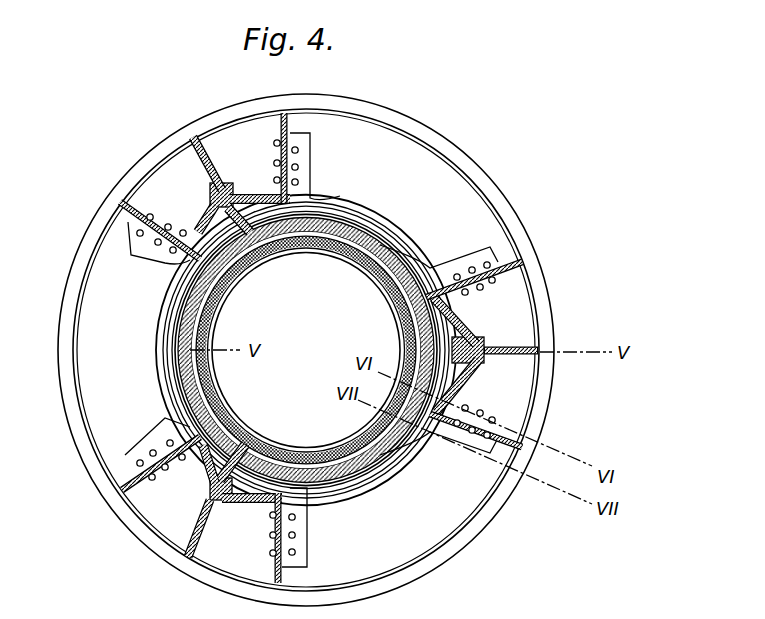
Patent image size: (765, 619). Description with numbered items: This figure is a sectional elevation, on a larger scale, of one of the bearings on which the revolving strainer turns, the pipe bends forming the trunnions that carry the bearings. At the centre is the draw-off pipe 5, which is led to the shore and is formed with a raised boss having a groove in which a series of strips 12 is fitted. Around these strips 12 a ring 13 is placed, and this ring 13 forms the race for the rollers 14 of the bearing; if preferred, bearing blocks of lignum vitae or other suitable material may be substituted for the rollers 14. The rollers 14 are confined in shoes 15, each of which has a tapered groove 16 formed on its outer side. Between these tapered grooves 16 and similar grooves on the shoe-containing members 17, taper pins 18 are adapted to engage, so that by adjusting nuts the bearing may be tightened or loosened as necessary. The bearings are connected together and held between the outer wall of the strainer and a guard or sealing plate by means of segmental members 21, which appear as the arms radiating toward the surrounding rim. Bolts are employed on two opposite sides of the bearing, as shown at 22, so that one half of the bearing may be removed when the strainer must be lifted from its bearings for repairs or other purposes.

The draw-off pipe 5 is at (228, 397).
The strips 12 is at (218, 320).
The ring 13 is at (308, 226).
The rollers 14 is at (252, 268).
The shoes 15 is at (246, 200).
The tapered groove 16 is at (231, 186).
The shoe-containing members 17 is at (165, 177).
The taper pins 18 is at (213, 205).
The segmental members 21 is at (130, 205).
The bolts 22 is at (273, 150).